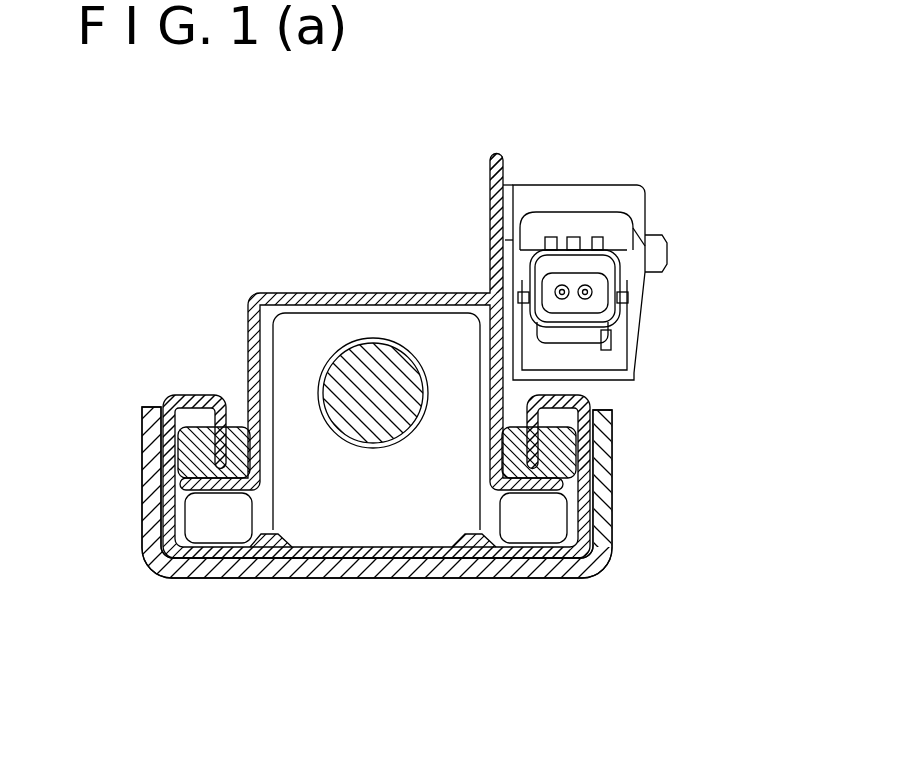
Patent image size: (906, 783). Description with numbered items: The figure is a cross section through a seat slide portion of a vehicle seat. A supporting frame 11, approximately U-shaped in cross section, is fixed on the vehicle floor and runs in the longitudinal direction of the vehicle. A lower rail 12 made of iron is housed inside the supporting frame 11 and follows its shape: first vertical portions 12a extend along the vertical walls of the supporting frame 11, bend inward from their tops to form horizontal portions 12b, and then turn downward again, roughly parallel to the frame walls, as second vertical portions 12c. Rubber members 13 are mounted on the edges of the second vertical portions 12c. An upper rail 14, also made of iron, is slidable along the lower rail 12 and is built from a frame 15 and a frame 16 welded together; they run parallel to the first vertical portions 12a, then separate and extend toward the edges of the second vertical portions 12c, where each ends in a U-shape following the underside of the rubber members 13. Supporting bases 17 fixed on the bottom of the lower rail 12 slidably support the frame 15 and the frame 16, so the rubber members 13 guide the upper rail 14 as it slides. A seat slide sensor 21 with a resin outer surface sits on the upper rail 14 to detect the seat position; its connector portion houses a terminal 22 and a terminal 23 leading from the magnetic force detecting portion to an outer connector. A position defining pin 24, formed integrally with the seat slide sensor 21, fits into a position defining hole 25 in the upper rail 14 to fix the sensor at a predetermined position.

The supporting frame 11 is at (603, 493).
The lower rail 12 is at (435, 465).
The first vertical portions 12a is at (606, 466).
The horizontal portions 12b is at (592, 394).
The second vertical portions 12c is at (505, 430).
The rubber members 13 is at (375, 317).
The upper rail 14 is at (375, 337).
The frame 15 is at (503, 168).
The frame 16 is at (498, 218).
The supporting bases 17 is at (532, 530).
The seat slide sensor 21 is at (537, 243).
The terminal 22 is at (587, 294).
The terminal 23 is at (556, 277).
The position defining pin 24 is at (650, 236).
The position defining hole 25 is at (490, 247).